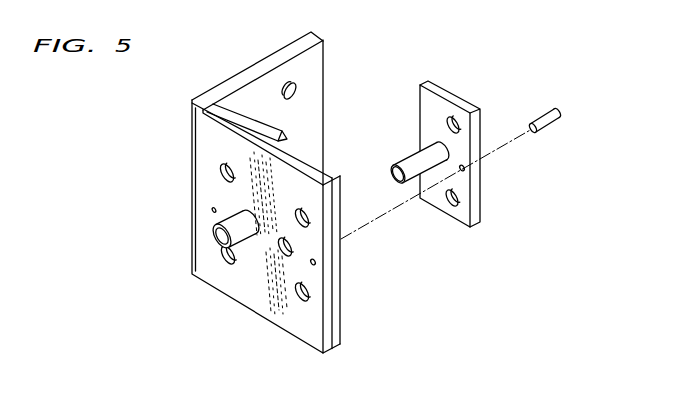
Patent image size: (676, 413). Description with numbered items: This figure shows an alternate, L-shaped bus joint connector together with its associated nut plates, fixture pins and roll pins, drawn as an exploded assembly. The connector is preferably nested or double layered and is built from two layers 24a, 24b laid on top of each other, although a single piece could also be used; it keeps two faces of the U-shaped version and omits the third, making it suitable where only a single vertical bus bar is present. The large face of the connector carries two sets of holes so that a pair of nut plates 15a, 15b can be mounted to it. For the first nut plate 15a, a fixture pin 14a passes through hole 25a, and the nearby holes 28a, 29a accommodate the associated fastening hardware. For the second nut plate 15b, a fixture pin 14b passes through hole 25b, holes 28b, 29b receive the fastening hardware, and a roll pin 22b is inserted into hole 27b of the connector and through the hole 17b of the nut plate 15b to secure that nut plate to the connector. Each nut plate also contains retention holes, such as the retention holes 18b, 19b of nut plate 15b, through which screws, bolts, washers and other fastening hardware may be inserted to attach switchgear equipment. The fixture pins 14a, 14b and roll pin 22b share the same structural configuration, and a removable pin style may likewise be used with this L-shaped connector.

The nut plate 15a is at (248, 108).
The nut plate 15b is at (456, 97).
The layer of bus joint connector 24a is at (302, 33).
The layer of bus joint connector 24b is at (323, 41).
The hole 25a is at (252, 220).
The hole 25b is at (287, 250).
The fixture pin 14a is at (211, 210).
The fixture pin 14b is at (408, 158).
The hole 28a is at (217, 170).
The hole 28b is at (312, 215).
The hole 29a is at (220, 256).
The hole 29b is at (314, 294).
The hole 27b is at (318, 262).
The hole 17b is at (465, 170).
The retention hole 18b is at (458, 128).
The retention hole 19b is at (460, 207).
The roll pin 22b is at (550, 126).